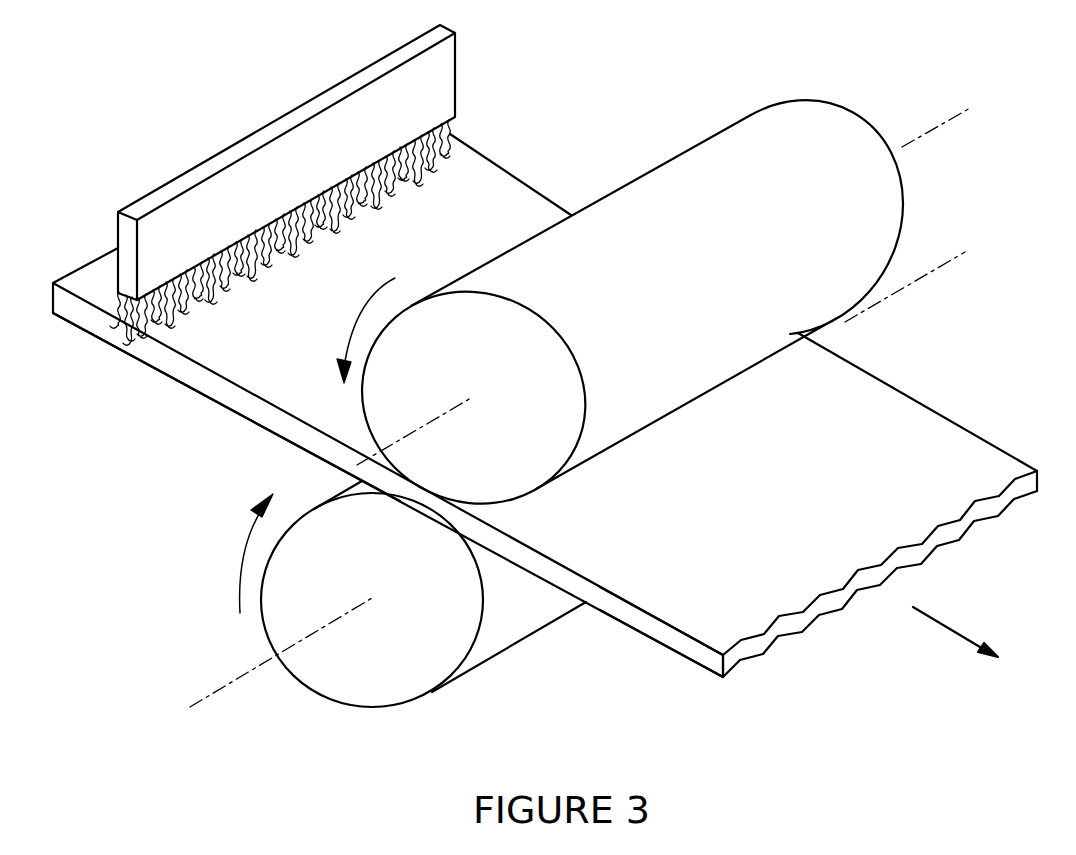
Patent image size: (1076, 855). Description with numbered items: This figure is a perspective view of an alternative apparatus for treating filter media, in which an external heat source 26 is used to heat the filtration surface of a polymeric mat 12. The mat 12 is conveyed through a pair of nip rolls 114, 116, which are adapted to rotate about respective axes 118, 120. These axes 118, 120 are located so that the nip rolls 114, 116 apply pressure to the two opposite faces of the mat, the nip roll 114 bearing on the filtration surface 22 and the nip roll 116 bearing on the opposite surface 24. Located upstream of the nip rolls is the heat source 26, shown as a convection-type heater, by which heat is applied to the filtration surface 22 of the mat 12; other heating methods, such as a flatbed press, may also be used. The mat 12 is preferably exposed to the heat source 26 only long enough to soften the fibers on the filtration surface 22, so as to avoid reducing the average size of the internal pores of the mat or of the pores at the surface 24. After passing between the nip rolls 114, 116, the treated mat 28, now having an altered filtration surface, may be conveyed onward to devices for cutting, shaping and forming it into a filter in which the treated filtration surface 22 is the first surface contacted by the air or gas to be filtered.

The mat 12 is at (522, 173).
The filtration surface 22 is at (240, 357).
The surface 24 is at (240, 424).
The heat source 26 is at (440, 87).
The mat 28 is at (682, 642).
The nip roll 114 is at (750, 138).
The nip roll 116 is at (410, 660).
The axis 118 is at (955, 108).
The axis 120 is at (948, 255).